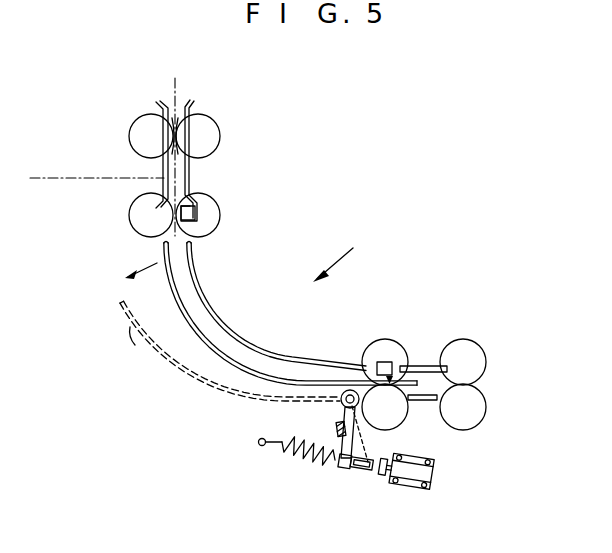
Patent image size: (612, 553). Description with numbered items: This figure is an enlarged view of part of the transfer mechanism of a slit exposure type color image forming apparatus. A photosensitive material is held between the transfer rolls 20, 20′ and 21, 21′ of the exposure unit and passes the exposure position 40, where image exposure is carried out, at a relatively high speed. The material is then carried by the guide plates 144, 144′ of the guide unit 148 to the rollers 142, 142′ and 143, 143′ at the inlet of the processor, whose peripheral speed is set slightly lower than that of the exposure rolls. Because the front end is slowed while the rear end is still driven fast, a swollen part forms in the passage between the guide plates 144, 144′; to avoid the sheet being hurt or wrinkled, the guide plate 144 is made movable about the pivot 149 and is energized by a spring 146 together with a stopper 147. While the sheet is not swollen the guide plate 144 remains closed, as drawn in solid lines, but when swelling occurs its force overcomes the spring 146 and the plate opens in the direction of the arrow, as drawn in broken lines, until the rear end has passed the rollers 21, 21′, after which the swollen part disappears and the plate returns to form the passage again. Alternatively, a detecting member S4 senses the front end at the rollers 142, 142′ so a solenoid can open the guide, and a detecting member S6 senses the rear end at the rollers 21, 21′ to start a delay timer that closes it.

The transfer roll 20 is at (134, 126).
The transfer roll 20′ is at (214, 126).
The transfer roll 21 is at (130, 215).
The transfer roll 21′ is at (219, 216).
The exposure position 40 is at (166, 178).
The detecting member S6 is at (196, 208).
The guide plate 144 is at (188, 311).
The guide plate 144′ is at (217, 302).
The guide unit 148 is at (380, 313).
The roller 142 is at (397, 421).
The roller 142′ is at (383, 339).
The roller 143 is at (473, 423).
The roller 143′ is at (465, 339).
The detecting member S4 is at (388, 363).
The pivot shaft 149 is at (341, 401).
The stopper 147 is at (337, 428).
The spring 146 is at (306, 455).